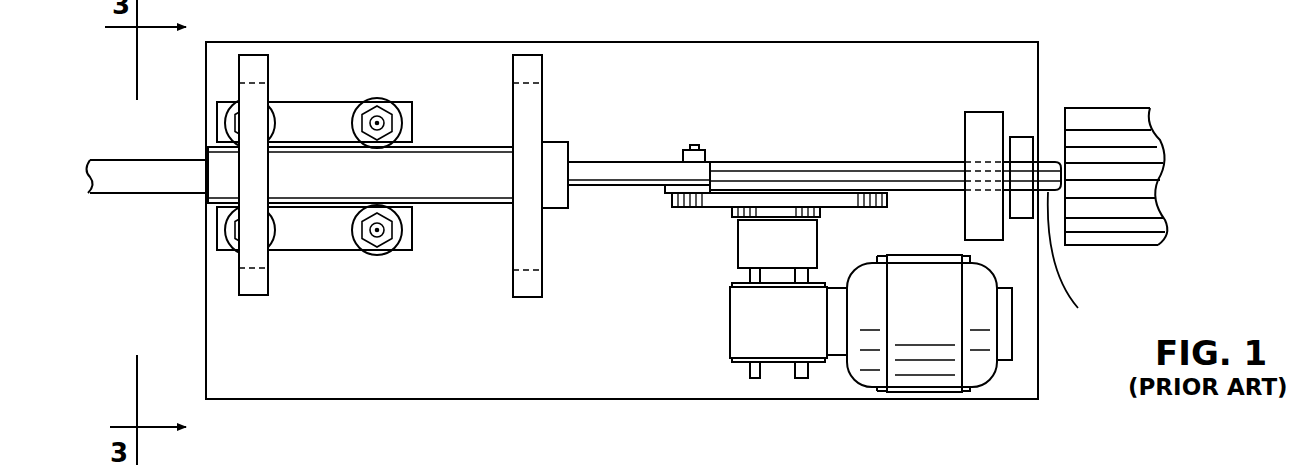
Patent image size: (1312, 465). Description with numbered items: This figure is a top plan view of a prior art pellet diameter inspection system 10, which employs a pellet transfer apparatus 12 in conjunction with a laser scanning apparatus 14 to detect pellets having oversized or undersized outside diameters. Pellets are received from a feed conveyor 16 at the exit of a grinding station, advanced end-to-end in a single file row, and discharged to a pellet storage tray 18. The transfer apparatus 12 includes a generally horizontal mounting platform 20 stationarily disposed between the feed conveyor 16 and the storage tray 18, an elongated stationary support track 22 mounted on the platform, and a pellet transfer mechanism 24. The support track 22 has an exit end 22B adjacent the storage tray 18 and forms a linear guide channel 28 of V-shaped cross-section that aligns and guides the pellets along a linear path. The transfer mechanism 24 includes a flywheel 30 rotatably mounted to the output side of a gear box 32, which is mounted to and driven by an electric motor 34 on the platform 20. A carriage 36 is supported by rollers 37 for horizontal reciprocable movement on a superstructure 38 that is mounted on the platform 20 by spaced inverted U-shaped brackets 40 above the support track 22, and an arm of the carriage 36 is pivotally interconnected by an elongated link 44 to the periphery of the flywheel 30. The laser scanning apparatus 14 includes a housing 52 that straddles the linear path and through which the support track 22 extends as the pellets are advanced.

The pellet diameter inspection system 10 is at (1062, 62).
The pellet transfer apparatus 12 is at (612, 350).
The laser scanning apparatus 14 is at (1000, 98).
The feed conveyor 16 is at (115, 194).
The pellet storage tray 18 is at (1138, 246).
The mounting platform 20 is at (1038, 367).
The stationary support track 22 is at (783, 160).
The exit end 22B is at (1093, 260).
The pellet transfer mechanism 24 is at (553, 230).
The linear guide channel 28 is at (905, 175).
The flywheel 30 is at (830, 196).
The gear box 32 is at (740, 258).
The electric motor 34 is at (850, 378).
The carriage 36 is at (306, 102).
The rollers 37 is at (238, 103).
The superstructure 38 is at (480, 158).
The inverted U-shaped brackets 40 is at (240, 262).
The elongated link 44 is at (590, 158).
The housing 52 is at (980, 112).